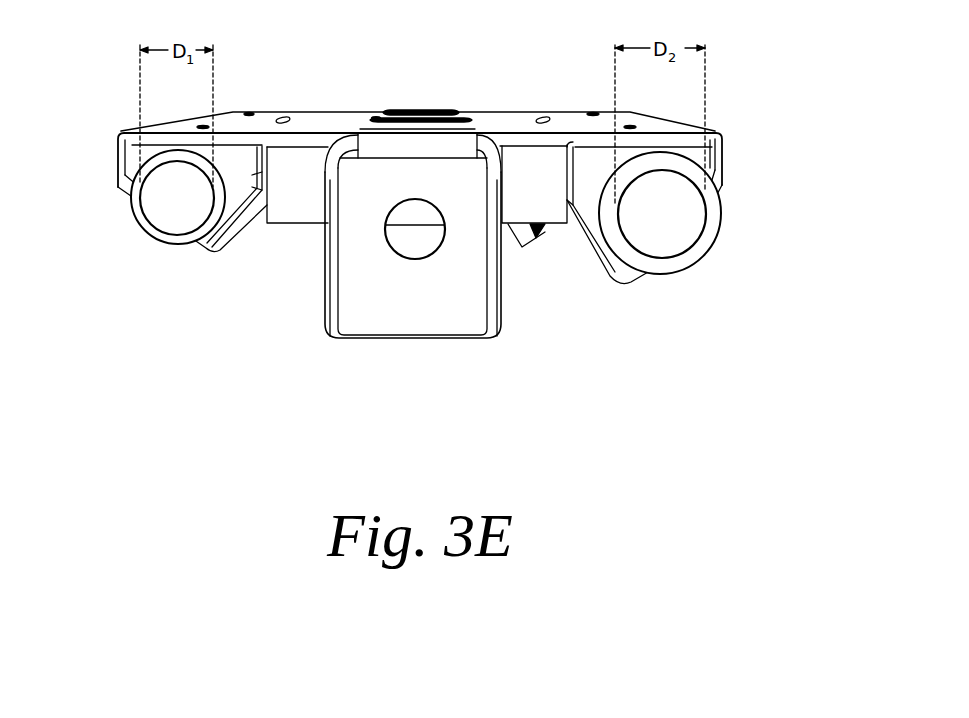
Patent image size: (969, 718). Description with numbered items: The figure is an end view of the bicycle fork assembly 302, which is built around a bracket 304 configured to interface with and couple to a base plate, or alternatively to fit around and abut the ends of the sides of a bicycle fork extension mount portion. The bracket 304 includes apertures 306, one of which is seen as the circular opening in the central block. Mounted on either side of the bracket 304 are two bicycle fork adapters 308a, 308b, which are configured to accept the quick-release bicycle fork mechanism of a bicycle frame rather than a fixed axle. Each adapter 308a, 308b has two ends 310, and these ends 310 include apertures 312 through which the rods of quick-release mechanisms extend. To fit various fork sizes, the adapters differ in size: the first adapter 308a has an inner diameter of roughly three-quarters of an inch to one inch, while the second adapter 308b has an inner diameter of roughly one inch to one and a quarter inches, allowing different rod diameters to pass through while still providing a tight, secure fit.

The bicycle fork assembly 302 is at (753, 106).
The bracket 304 is at (497, 303).
The apertures 306 is at (401, 248).
The bicycle fork adapter 308a is at (138, 222).
The bicycle fork adapter 308b is at (713, 240).
The ends 310 is at (172, 243).
The apertures 312 is at (423, 209).